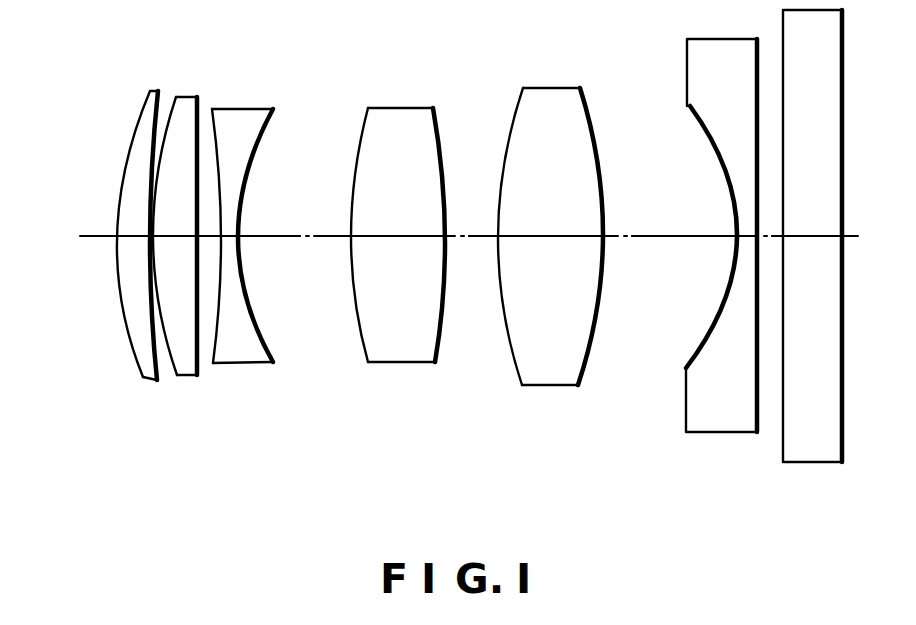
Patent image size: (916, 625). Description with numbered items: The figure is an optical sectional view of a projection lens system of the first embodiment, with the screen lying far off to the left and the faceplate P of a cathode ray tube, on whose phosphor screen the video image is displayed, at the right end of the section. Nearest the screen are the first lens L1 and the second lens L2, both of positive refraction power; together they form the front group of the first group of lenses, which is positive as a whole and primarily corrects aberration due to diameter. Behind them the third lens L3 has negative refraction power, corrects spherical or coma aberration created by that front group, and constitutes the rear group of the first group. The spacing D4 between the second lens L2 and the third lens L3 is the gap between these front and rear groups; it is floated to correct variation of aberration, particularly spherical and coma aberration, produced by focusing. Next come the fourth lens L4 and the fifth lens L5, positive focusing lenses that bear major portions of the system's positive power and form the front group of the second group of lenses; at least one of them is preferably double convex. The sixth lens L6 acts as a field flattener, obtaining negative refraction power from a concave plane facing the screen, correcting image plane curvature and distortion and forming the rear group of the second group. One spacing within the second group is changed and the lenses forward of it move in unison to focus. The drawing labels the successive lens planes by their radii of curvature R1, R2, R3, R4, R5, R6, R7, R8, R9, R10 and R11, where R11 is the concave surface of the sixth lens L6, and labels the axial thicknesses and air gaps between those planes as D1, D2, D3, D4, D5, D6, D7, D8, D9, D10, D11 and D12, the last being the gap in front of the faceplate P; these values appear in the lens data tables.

The first lens L1 is at (139, 242).
The second lens L2 is at (205, 242).
The third lens L3 is at (273, 242).
The fourth lens L4 is at (404, 242).
The fifth lens L5 is at (548, 242).
The sixth lens L6 is at (694, 266).
The faceplate P is at (812, 457).
The radius of curvature of first lens plane R1 is at (148, 97).
The radius of curvature of second lens plane R2 is at (159, 91).
The radius of curvature of third lens plane R3 is at (172, 100).
The radius of curvature of fourth lens plane R4 is at (203, 102).
The radius of curvature of fifth lens plane R5 is at (215, 130).
The radius of curvature of sixth lens plane R6 is at (272, 127).
The radius of curvature of seventh lens plane R7 is at (363, 122).
The radius of curvature of eighth lens plane R8 is at (435, 118).
The radius of curvature of ninth lens plane R9 is at (517, 107).
The radius of curvature of tenth lens plane R10 is at (587, 102).
The radius of curvature of eleventh lens plane R11 is at (692, 112).
The thickness between first and second lens planes D1 is at (130, 240).
The air gap between second and third lens planes D2 is at (150, 244).
The thickness between third and fourth lens planes D3 is at (171, 242).
The spacing between front group and rear group of first lens group D4 is at (207, 243).
The thickness between fifth and sixth lens planes D5 is at (233, 243).
The air gap between sixth and seventh lens planes D6 is at (324, 242).
The thickness between seventh and eighth lens planes D7 is at (397, 241).
The air gap between eighth and ninth lens planes D8 is at (473, 241).
The thickness between ninth and tenth lens planes D9 is at (553, 241).
The air gap between tenth and eleventh lens planes D10 is at (657, 241).
The thickness following eleventh lens plane D11 is at (747, 242).
The air gap to faceplate D12 is at (813, 242).